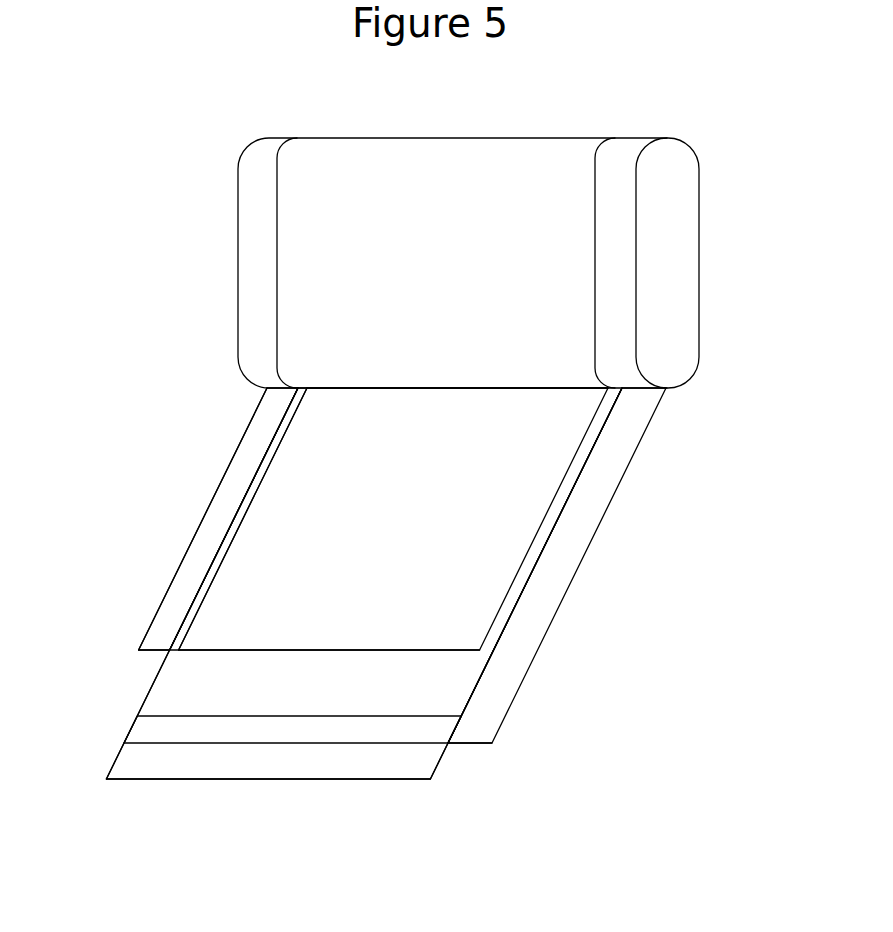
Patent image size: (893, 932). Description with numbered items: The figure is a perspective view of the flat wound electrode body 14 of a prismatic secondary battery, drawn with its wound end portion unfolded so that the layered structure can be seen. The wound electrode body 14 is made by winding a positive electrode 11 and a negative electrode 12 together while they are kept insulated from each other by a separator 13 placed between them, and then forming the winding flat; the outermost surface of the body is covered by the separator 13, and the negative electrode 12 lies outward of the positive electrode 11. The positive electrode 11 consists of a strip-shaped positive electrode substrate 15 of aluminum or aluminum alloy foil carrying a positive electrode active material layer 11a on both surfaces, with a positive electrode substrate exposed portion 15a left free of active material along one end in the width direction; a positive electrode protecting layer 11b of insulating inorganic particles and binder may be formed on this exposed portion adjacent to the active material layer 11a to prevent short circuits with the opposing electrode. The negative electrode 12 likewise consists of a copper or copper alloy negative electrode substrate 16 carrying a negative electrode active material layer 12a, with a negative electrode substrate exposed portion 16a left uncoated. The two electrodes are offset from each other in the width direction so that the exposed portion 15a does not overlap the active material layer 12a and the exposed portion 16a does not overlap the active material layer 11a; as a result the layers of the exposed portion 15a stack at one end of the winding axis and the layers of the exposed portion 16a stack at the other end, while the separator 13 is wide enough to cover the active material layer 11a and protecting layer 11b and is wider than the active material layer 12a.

The positive electrode 11 is at (327, 432).
The positive electrode active material layer 11a is at (303, 485).
The positive electrode protecting layer 11b is at (237, 532).
The negative electrode 12 is at (662, 426).
The negative electrode active material layer 12a is at (420, 729).
The separator 13 is at (540, 221).
The wound electrode body 14 is at (238, 237).
The positive electrode substrate 15 is at (262, 327).
The positive electrode substrate exposed portion 15a is at (173, 622).
The negative electrode substrate 16 is at (617, 283).
The negative electrode substrate exposed portion 16a is at (550, 593).